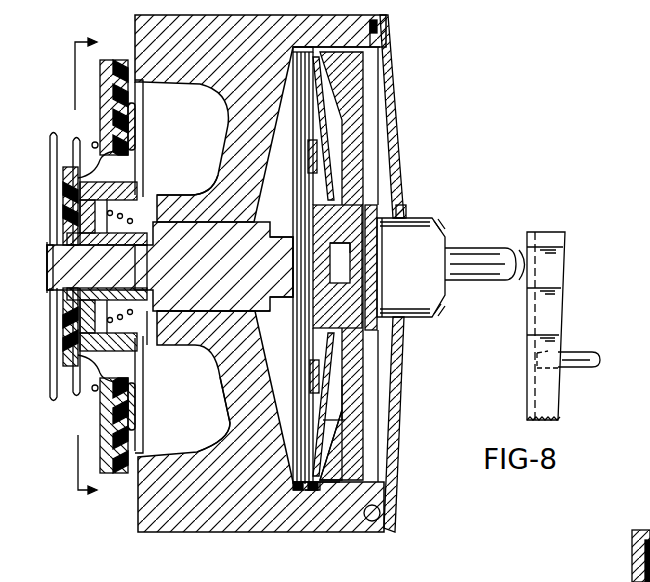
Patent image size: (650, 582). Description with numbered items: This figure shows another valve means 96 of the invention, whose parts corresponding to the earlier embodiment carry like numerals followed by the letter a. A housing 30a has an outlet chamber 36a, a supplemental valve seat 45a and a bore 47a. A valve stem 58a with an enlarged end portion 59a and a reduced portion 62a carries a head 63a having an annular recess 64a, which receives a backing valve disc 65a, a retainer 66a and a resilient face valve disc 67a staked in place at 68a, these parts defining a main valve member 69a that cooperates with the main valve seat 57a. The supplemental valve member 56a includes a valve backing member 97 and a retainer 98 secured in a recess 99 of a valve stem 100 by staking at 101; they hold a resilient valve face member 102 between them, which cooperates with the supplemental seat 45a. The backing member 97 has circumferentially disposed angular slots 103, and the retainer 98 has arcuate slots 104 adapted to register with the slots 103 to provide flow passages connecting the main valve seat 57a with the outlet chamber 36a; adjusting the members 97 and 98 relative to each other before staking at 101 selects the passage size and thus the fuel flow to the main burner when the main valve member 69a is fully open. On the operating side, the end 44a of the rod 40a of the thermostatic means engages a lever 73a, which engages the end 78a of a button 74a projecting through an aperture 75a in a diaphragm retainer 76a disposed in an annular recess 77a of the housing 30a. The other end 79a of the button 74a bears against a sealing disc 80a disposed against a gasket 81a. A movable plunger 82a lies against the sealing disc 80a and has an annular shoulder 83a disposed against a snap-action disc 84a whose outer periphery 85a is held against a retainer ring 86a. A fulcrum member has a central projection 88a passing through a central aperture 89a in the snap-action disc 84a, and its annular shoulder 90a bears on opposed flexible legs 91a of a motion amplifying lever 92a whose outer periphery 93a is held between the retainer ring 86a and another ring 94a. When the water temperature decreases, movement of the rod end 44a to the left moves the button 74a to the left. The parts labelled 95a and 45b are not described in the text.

The housing 30a is at (241, 46).
The outlet chamber 36a is at (193, 448).
The supplemental valve seat 45a is at (134, 71).
The sealing ring 45b is at (631, 545).
The bore 47a is at (202, 215).
The supplemental valve member 56a is at (108, 460).
The main valve seat 57a is at (95, 146).
The valve stem 58a is at (220, 357).
The enlarged end portion 59a is at (231, 302).
The reduced portion 62a is at (182, 266).
The head 63a is at (67, 282).
The annular recess 64a is at (67, 262).
The backing valve disc 65a is at (63, 180).
The retainer 66a is at (50, 295).
The resilient face valve disc 67a is at (70, 200).
The staking 68a is at (52, 279).
The main valve member 69a is at (40, 351).
The lever 73a is at (548, 240).
The button 74a is at (443, 248).
The aperture 75a is at (407, 217).
The diaphragm retainer 76a is at (397, 117).
The annular recess 77a is at (387, 32).
The button end 78a is at (498, 256).
The other button end 79a is at (377, 308).
The sealing disc 80a is at (363, 172).
The gasket 81a is at (380, 486).
The movable plunger 82a is at (350, 393).
The annular shoulder 83a is at (300, 487).
The snap-action disc 84a is at (365, 424).
The outer periphery 85a is at (316, 492).
The retainer ring 86a is at (305, 495).
The central projection 88a is at (415, 280).
The central aperture 89a is at (340, 258).
The annular shoulder 90a is at (311, 375).
The flexible legs 91a is at (288, 430).
The motion amplifying lever 92a is at (290, 478).
The outer periphery 93a is at (293, 503).
The ring 94a is at (272, 72).
The bore 95a is at (293, 252).
The valve means 96 is at (415, 86).
The valve backing member 97 is at (93, 275).
The retainer 98 is at (156, 394).
The recess 99 is at (130, 330).
The valve stem 100 is at (146, 198).
The staking 101 is at (93, 287).
The resilient valve face member 102 is at (140, 437).
The angular slots 103 is at (93, 384).
The arcuate slots 104 is at (118, 345).
The rod 40a is at (582, 352).
The rod end 44a is at (543, 355).